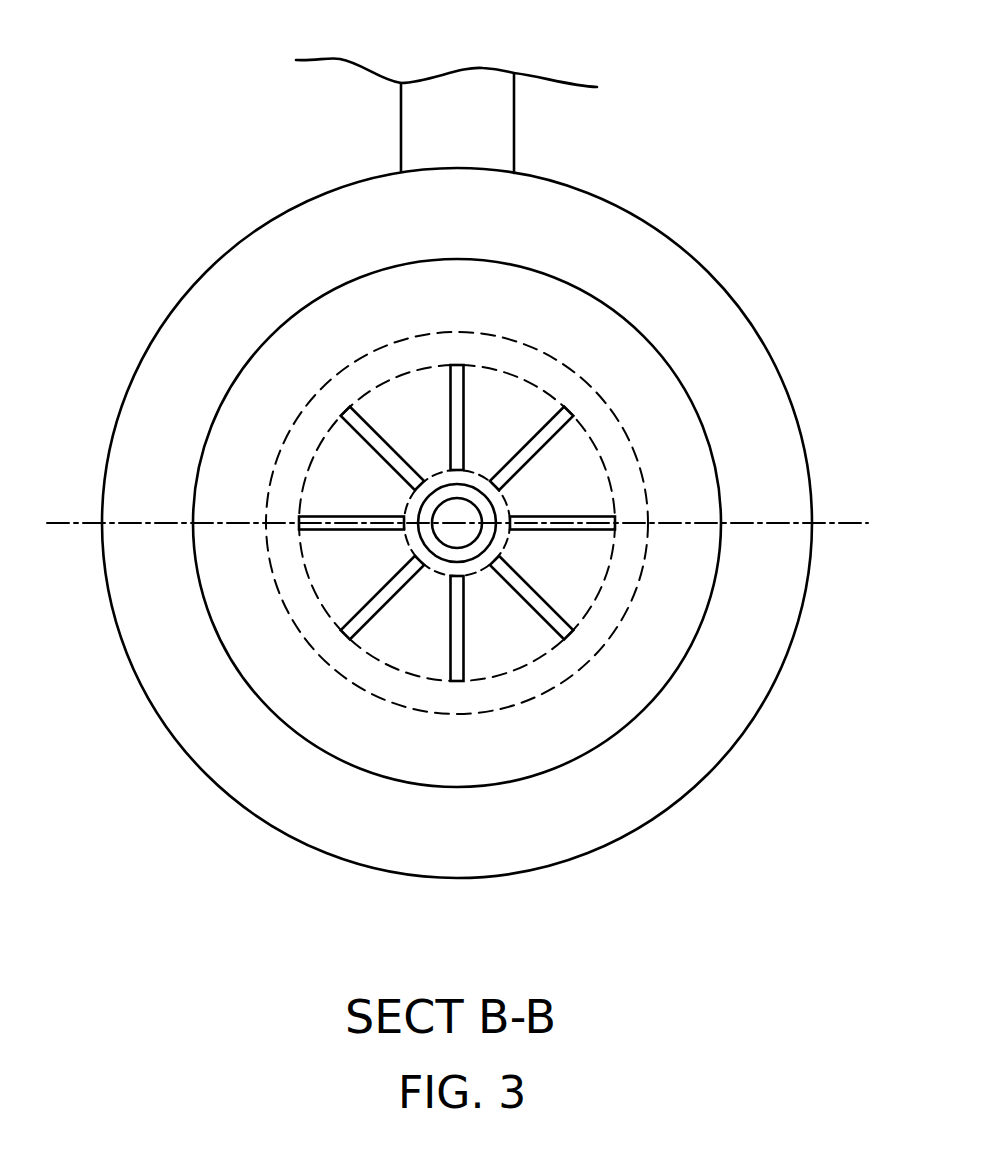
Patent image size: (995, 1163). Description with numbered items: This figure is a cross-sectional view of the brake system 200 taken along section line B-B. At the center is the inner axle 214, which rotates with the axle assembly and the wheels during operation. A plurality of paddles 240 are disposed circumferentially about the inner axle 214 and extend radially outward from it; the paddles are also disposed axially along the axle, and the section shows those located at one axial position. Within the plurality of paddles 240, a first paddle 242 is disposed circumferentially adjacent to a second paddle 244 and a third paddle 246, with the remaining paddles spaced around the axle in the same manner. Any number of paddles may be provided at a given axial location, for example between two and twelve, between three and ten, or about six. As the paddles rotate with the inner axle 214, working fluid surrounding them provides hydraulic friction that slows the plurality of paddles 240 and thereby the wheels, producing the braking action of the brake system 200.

The brake system 200 is at (262, 97).
The inner axle 214 is at (507, 502).
The plurality of paddles 240 is at (557, 427).
The first paddle 242 is at (365, 433).
The second paddle 244 is at (463, 387).
The third paddle 246 is at (380, 598).